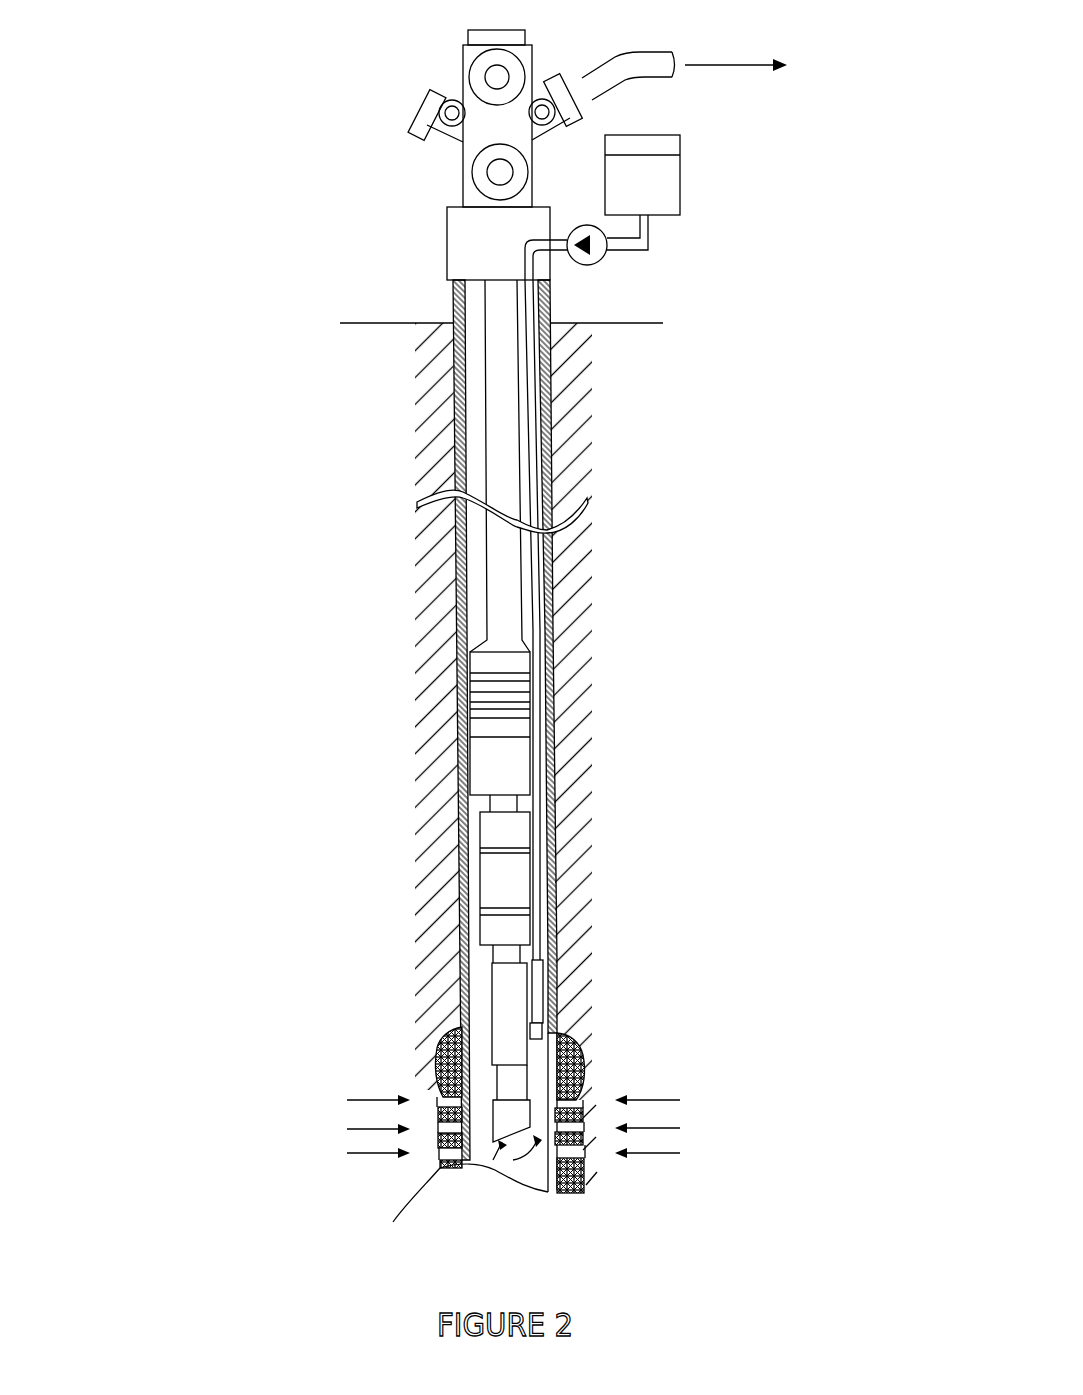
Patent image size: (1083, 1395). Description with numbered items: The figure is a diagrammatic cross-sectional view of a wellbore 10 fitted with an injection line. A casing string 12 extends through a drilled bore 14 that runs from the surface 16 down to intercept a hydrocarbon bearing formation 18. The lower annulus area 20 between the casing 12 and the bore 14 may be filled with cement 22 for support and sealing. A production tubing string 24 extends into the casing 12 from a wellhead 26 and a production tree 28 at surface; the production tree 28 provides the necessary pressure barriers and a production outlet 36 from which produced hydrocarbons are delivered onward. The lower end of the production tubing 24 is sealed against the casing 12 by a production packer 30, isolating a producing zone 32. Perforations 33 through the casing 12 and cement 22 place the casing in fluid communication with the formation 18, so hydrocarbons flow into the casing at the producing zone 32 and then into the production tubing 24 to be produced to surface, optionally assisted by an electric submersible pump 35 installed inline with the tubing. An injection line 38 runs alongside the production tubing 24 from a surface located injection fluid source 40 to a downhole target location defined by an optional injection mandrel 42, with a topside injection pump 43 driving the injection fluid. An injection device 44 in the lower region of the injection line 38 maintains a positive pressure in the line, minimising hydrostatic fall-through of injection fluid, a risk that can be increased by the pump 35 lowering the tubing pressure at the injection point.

The wellbore 10 is at (138, 213).
The casing string 12 is at (545, 383).
The drilled bore 14 is at (550, 460).
The surface 16 is at (355, 323).
The hydrocarbon bearing formation 18 is at (567, 1126).
The lower annulus area 20 is at (450, 1048).
The cement 22 is at (575, 1048).
The production tubing string 24 is at (500, 563).
The wellhead 26 is at (462, 222).
The production tree 28 is at (477, 110).
The production packer 30 is at (485, 737).
The producing zone 32 is at (527, 1168).
The perforations 33 is at (565, 1105).
The electric submersible pump 35 is at (495, 862).
The production outlet 36 is at (647, 62).
The injection line 38 is at (533, 578).
The injection fluid source 40 is at (682, 176).
The injection mandrel 42 is at (500, 990).
The injection pump 43 is at (600, 255).
The injection device 44 is at (538, 968).